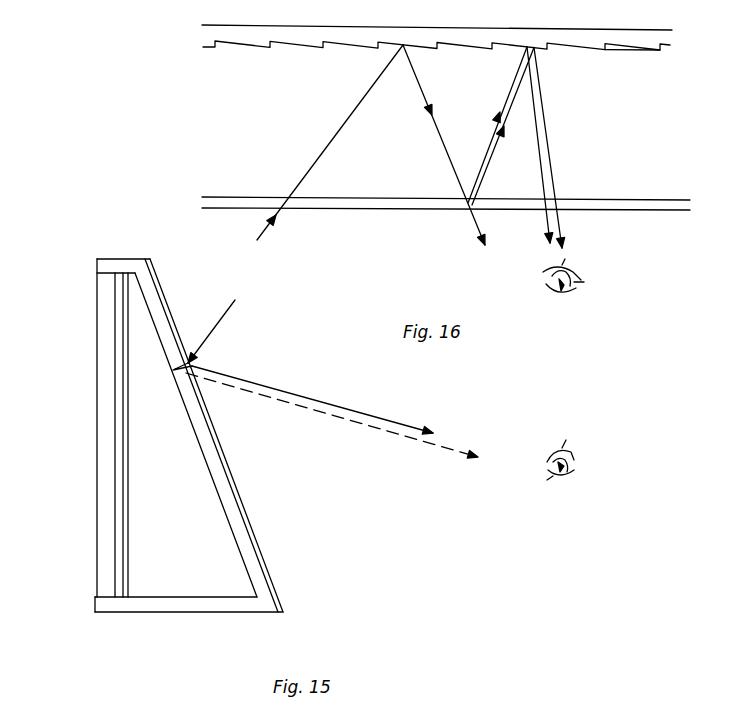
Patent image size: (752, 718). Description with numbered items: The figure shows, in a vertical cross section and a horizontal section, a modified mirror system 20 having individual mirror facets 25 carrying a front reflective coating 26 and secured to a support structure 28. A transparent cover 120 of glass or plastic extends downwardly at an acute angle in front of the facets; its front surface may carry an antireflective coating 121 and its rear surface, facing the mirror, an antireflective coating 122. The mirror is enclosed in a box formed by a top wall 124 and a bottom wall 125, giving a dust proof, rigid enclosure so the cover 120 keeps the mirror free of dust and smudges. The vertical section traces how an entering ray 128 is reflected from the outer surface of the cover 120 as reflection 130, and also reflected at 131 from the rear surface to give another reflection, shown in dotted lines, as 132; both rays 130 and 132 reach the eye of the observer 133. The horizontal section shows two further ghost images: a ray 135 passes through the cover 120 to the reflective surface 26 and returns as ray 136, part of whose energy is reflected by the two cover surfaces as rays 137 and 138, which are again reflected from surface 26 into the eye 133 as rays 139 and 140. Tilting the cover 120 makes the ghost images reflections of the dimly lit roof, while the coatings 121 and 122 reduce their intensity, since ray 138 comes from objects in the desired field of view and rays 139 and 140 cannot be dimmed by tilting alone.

In FIG. 15, the mirror system 20 is at (173, 410).
In FIG. 16, the mirror facets 25 is at (651, 63).
In FIG. 15, the mirror facets 25 is at (142, 476).
In FIG. 16, the front reflective coating 26 is at (618, 50).
In FIG. 15, the front reflective coating 26 is at (132, 450).
In FIG. 15, the support structure 28 is at (97, 292).
In FIG. 16, the transparent cover 120 is at (632, 198).
In FIG. 15, the transparent cover 120 is at (252, 552).
In FIG. 15, the antireflective coating 121 is at (243, 502).
In FIG. 15, the antireflective coating 122 is at (232, 530).
In FIG. 15, the top wall 124 is at (108, 258).
In FIG. 15, the bottom wall 125 is at (92, 602).
In FIG. 15, the entering ray 128 is at (217, 330).
In FIG. 15, the reflection from outer surface of cover 130 is at (358, 407).
In FIG. 15, the rear-surface reflection point 131 is at (173, 370).
In FIG. 15, the reflection from rear surface of cover 132 is at (370, 427).
In FIG. 16, the eye of the observer 133 is at (570, 290).
In FIG. 15, the eye of the observer 133 is at (567, 457).
In FIG. 16, the ray 135 is at (344, 122).
In FIG. 16, the ray 136 is at (438, 138).
In FIG. 16, the ray 137 is at (512, 86).
In FIG. 16, the ray 138 is at (493, 149).
In FIG. 16, the ray 139 is at (543, 181).
In FIG. 16, the ray 140 is at (553, 168).